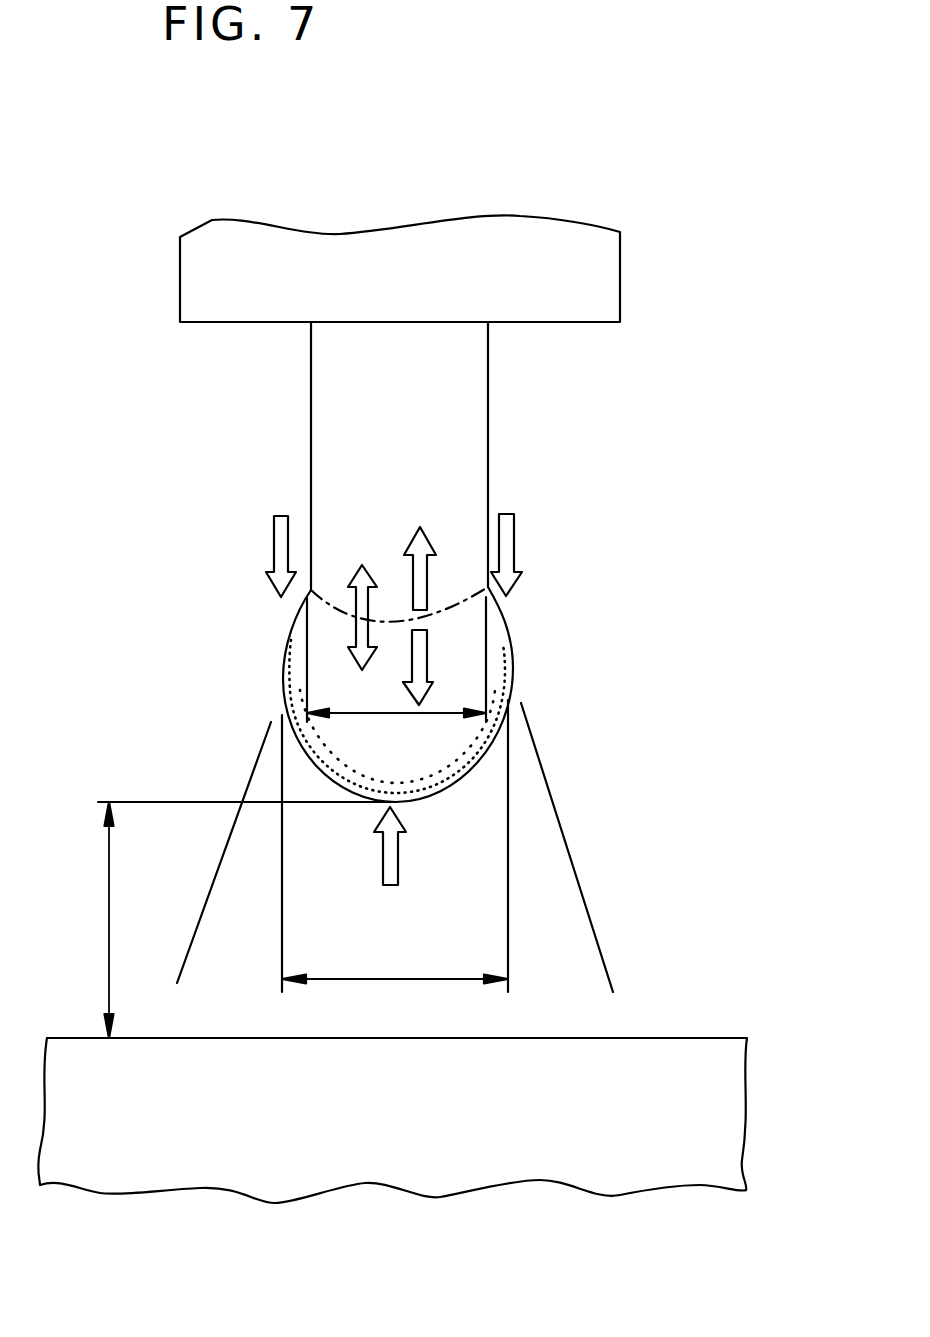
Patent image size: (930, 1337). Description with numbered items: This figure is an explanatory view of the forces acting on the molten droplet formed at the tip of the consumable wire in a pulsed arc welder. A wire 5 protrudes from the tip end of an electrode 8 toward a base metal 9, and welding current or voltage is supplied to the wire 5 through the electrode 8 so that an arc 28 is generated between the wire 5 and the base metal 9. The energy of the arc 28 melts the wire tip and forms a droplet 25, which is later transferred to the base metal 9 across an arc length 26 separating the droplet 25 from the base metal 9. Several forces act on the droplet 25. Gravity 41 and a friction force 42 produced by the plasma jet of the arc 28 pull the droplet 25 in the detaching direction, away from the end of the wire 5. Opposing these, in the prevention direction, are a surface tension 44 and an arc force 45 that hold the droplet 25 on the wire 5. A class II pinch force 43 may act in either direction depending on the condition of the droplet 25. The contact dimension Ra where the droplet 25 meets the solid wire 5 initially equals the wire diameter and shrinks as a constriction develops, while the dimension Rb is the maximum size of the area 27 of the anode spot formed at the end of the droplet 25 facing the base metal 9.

The electrode 8 is at (607, 261).
The wire 5 is at (475, 408).
The droplet 25 is at (463, 736).
The area of anode spot 27 is at (455, 783).
The arc length 26 is at (108, 867).
The arc 28 is at (578, 962).
The friction force 42 is at (273, 532).
The surface tension 44 is at (423, 530).
The class II pinch force 43 is at (356, 624).
The gravity 41 is at (427, 657).
The arc force 45 is at (398, 860).
The base metal 9 is at (727, 1138).